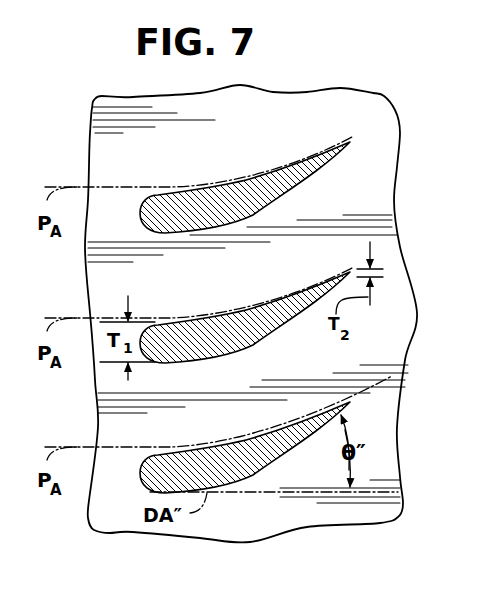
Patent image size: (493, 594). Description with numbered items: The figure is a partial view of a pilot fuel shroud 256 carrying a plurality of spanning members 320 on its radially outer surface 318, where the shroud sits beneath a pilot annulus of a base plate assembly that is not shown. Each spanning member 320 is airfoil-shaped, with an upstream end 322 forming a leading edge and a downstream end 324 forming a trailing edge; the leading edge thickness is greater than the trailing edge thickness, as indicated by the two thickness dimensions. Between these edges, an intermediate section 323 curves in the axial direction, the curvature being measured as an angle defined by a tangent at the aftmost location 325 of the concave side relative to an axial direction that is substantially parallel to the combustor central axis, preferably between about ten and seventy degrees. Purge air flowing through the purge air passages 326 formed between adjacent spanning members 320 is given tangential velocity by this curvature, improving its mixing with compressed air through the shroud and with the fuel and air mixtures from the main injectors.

The pilot fuel shroud 256 is at (302, 531).
The radially outer surface 318 is at (400, 327).
The spanning members 320 is at (264, 192).
The upstream end 322 is at (90, 260).
The intermediate section 323 is at (238, 197).
The downstream end 324 is at (347, 132).
The aftmost location 325 is at (349, 144).
The purge air passages 326 is at (118, 167).